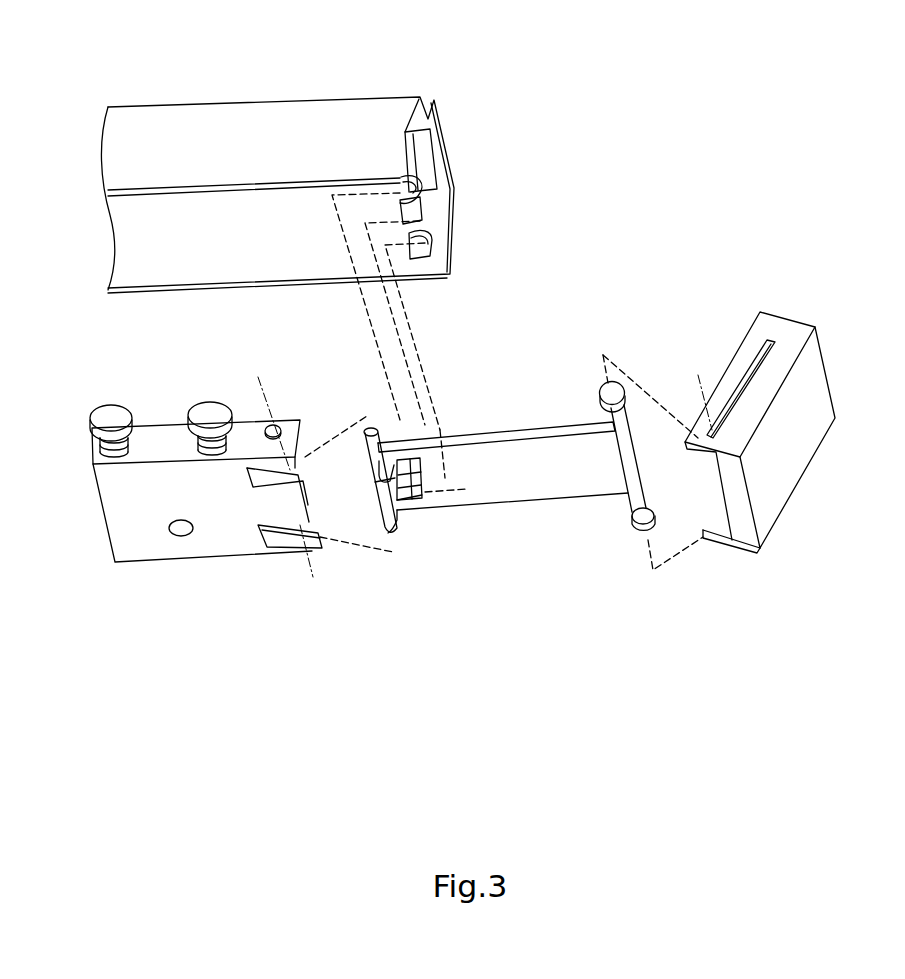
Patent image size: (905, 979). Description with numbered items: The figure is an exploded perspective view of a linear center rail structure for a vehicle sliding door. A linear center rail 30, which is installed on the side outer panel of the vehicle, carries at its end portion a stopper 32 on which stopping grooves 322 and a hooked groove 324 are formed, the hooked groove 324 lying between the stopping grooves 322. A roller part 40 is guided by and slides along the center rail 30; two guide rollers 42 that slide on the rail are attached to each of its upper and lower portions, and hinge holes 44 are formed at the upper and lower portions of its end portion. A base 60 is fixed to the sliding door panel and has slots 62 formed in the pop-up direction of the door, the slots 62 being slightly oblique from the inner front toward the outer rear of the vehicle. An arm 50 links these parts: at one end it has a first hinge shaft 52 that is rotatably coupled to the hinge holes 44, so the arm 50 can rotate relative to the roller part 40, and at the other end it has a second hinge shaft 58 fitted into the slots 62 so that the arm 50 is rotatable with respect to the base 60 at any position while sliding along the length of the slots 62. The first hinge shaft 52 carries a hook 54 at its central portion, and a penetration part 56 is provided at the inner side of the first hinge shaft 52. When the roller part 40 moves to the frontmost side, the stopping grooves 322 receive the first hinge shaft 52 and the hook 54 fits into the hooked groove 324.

The linear center rail 30 is at (373, 118).
The stopper 32 is at (428, 167).
The stopping grooves 322 is at (433, 190).
The hooked groove 324 is at (430, 223).
The roller part 40 is at (168, 440).
The guide rollers 42 is at (93, 420).
The hinge holes 44 is at (288, 422).
The arm 50 is at (542, 487).
The first hinge shaft 52 is at (368, 420).
The hook 54 is at (418, 472).
The penetration part 56 is at (405, 503).
The second hinge shaft 58 is at (630, 522).
The base 60 is at (782, 323).
The slots 62 is at (747, 377).